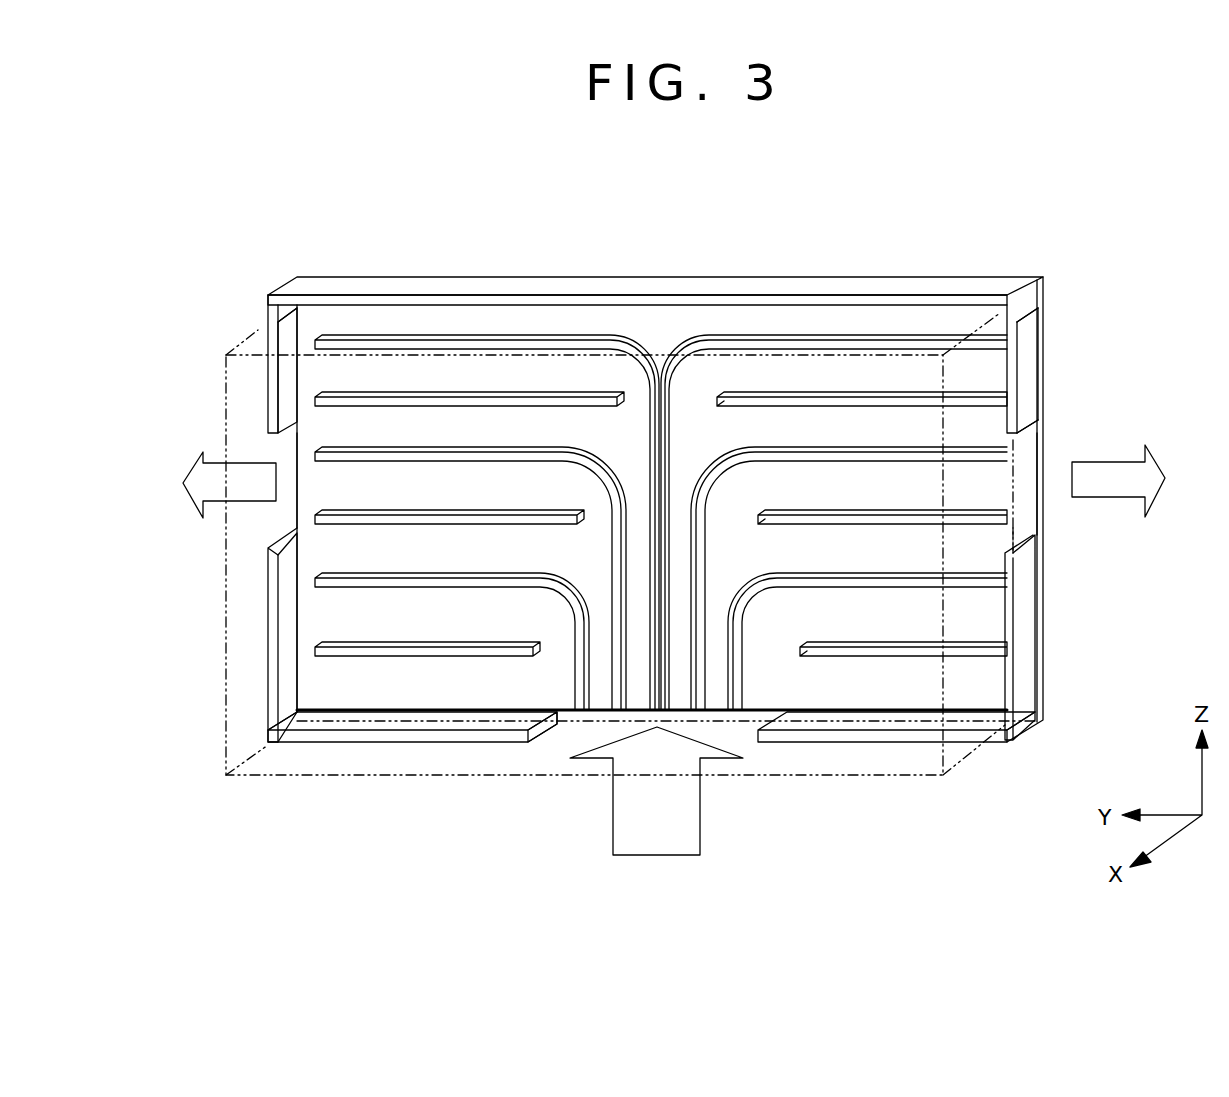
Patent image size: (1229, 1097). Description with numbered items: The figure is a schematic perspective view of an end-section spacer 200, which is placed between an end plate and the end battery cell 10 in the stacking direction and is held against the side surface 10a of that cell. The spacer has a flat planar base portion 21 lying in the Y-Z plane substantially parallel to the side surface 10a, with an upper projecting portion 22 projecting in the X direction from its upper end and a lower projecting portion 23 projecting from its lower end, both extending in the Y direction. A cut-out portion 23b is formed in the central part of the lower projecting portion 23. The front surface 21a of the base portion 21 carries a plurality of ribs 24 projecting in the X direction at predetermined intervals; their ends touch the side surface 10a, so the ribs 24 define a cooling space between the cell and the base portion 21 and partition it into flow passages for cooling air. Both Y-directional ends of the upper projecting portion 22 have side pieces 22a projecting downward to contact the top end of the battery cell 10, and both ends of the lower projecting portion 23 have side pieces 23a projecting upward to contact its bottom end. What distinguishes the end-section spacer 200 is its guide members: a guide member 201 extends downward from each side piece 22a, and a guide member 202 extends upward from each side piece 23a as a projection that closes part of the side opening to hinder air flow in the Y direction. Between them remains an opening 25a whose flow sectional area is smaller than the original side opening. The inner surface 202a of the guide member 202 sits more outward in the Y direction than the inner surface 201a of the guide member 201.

The battery cell 10 is at (316, 775).
The side surface 10a is at (275, 762).
The end-section spacer 200 is at (365, 278).
The base portion 21 is at (1045, 333).
The front surface 21a is at (1025, 447).
The upper projecting portion 22 is at (640, 292).
The side piece 22a is at (272, 322).
The lower projecting portion 23 is at (444, 745).
The side piece 23a is at (272, 722).
The cut-out portion 23b is at (558, 728).
The rib 24 is at (430, 350).
The opening 25a is at (295, 456).
The guide member 201 is at (272, 380).
The inner surface 201a is at (292, 395).
The guide member 202 is at (275, 610).
The inner surface 202a is at (285, 668).